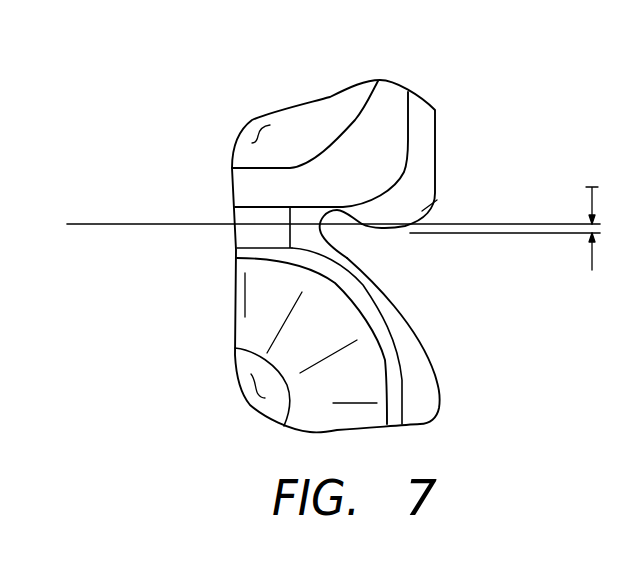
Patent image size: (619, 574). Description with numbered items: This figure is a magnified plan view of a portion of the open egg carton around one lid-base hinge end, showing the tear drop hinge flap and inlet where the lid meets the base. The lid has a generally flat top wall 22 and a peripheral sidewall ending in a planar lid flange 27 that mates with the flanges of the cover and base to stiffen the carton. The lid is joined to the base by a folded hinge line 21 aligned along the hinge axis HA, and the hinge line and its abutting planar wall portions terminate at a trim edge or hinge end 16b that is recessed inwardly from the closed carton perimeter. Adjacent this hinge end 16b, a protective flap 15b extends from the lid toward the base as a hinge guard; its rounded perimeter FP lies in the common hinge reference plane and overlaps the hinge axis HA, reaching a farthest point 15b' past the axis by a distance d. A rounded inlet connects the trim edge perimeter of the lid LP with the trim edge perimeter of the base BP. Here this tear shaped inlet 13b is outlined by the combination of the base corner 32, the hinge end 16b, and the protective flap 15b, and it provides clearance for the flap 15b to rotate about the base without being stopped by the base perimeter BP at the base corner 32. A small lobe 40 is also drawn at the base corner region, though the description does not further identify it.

The top wall 22 is at (257, 133).
The second trim edge 16b is at (318, 226).
The folded hinge line 21 is at (233, 223).
The tear shaped inlet 13b is at (318, 230).
The lid flange 27 is at (437, 110).
The second protective flap 15b is at (490, 165).
The farthest point 15b' is at (442, 248).
The base corner 32 is at (422, 312).
The lobe 40 is at (248, 390).
The hinge axis HA is at (331, 217).
The trim edge perimeter of the lid LP is at (437, 133).
The rounded perimeter of the flap FP is at (453, 224).
The trim edge perimeter of the base BP is at (442, 384).
The distance d is at (601, 222).